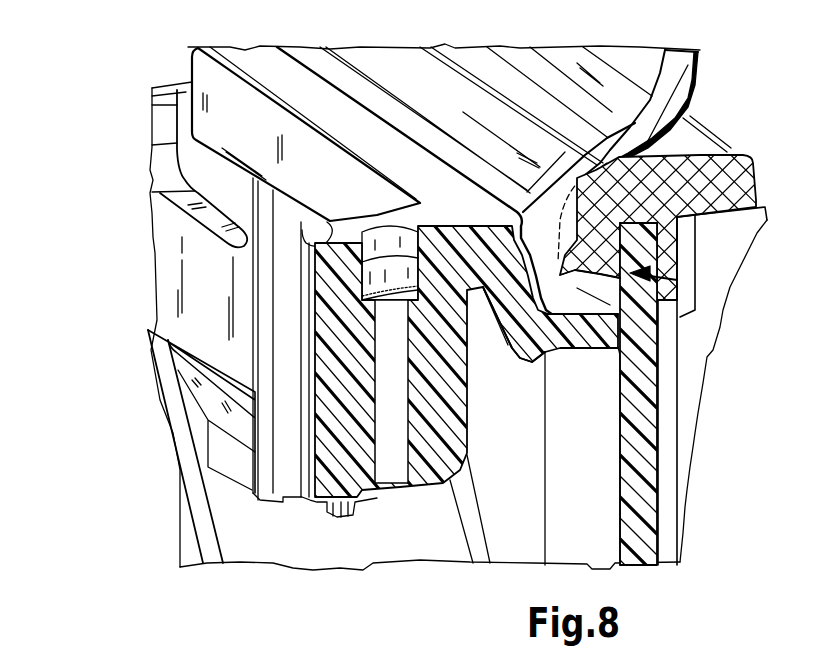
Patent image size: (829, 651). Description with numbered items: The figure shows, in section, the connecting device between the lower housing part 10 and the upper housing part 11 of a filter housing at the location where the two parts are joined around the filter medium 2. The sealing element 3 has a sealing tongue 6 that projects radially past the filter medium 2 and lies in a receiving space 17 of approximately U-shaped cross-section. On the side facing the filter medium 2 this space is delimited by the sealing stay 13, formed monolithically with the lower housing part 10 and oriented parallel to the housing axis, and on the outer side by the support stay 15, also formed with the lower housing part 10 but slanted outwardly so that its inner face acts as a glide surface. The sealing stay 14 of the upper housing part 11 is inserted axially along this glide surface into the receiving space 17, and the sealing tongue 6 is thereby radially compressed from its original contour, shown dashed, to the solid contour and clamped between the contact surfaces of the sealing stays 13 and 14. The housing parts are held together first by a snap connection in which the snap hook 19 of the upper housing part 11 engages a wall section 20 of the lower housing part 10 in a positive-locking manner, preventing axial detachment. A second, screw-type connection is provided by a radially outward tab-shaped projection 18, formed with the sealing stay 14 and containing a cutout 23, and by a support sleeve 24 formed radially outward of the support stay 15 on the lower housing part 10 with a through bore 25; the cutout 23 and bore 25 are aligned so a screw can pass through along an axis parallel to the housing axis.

The filter medium 2 is at (750, 444).
The sealing element 3 is at (717, 173).
The sealing tongue 6 is at (597, 265).
The lower housing part 10 is at (640, 527).
The upper housing part 11 is at (685, 81).
The sealing stay 13 is at (677, 280).
The sealing stay 14 is at (531, 261).
The support stay 15 is at (510, 313).
The receiving space 17 is at (560, 318).
The projection 18 is at (327, 225).
The snap hook 19 is at (232, 453).
The wall section 20 is at (212, 215).
The cutout 23 is at (369, 225).
The support sleeve 24 is at (437, 470).
The through bore 25 is at (413, 267).